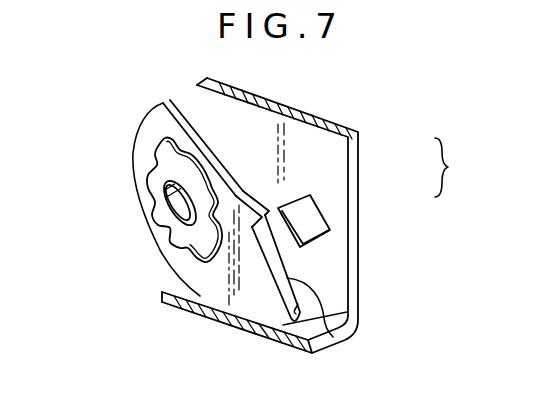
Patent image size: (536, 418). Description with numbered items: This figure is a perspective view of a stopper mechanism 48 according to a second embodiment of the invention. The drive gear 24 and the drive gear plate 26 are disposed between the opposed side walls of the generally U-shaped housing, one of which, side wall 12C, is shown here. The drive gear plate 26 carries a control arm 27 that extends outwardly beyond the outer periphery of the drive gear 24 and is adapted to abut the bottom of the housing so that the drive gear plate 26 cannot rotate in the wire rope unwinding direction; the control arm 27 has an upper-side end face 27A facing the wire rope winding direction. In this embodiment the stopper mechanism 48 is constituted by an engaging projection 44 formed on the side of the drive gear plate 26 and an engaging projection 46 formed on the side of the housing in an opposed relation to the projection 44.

The side wall 12C is at (288, 130).
The drive gear 24 is at (160, 209).
The drive gear plate 26 is at (204, 294).
The control arm 27 is at (287, 322).
The upper-side end face 27A is at (320, 326).
The engaging projection 44 is at (263, 212).
The engaging projection 46 is at (306, 221).
The stopper mechanism 48 is at (462, 167).